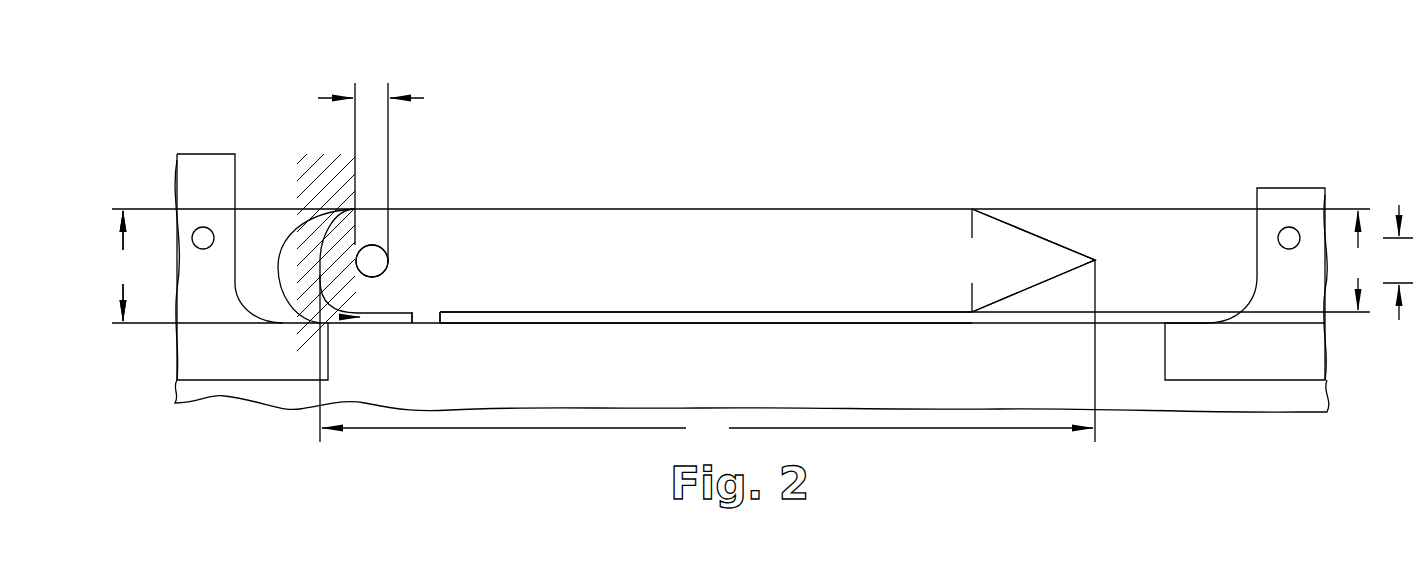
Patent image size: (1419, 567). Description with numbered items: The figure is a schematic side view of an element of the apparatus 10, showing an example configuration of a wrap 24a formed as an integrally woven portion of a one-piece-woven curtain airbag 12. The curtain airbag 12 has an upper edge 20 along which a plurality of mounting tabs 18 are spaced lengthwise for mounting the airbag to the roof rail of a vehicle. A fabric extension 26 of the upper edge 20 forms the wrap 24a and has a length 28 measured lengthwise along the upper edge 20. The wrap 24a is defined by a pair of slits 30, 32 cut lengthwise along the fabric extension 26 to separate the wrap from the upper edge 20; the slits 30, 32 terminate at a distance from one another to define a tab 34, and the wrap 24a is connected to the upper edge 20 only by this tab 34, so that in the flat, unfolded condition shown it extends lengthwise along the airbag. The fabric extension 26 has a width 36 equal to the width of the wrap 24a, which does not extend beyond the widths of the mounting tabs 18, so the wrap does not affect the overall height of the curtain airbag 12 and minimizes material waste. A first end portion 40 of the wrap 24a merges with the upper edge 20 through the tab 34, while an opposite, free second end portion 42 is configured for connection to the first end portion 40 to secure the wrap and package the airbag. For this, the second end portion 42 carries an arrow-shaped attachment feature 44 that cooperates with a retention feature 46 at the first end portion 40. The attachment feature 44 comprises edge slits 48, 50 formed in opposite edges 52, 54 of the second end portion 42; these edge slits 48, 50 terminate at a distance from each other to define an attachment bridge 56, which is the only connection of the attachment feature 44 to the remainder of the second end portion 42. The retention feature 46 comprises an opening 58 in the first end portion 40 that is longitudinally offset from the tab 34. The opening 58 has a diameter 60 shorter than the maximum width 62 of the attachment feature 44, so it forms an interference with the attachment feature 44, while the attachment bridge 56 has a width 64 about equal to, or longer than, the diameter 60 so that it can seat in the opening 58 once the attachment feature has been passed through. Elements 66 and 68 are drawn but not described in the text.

The apparatus 10 is at (220, 83).
The curtain airbag 12 is at (1233, 393).
The mounting tabs 18 is at (188, 180).
The upper edge 20 is at (1145, 323).
The wrap 24a is at (752, 248).
The fabric extension 26 is at (620, 247).
The length 28 is at (706, 359).
The slit 30 is at (283, 245).
The slit 32 is at (642, 318).
The tab 34 is at (427, 326).
The width 36 is at (127, 266).
The first end portion 40 is at (425, 238).
The second end portion 42 is at (852, 252).
The attachment feature 44 is at (1015, 247).
The retention feature 46 is at (376, 245).
The edge slit 48 is at (987, 222).
The edge slit 50 is at (972, 287).
The edge 52 is at (893, 208).
The edge 54 is at (933, 313).
The attachment bridge 56 is at (970, 267).
The opening 58 is at (372, 261).
The diameter 60 is at (387, 173).
The maximum width 62 is at (1308, 261).
The width 64 is at (1400, 279).
The first inclined surface 66 is at (985, 222).
The second inclined surface 68 is at (972, 287).